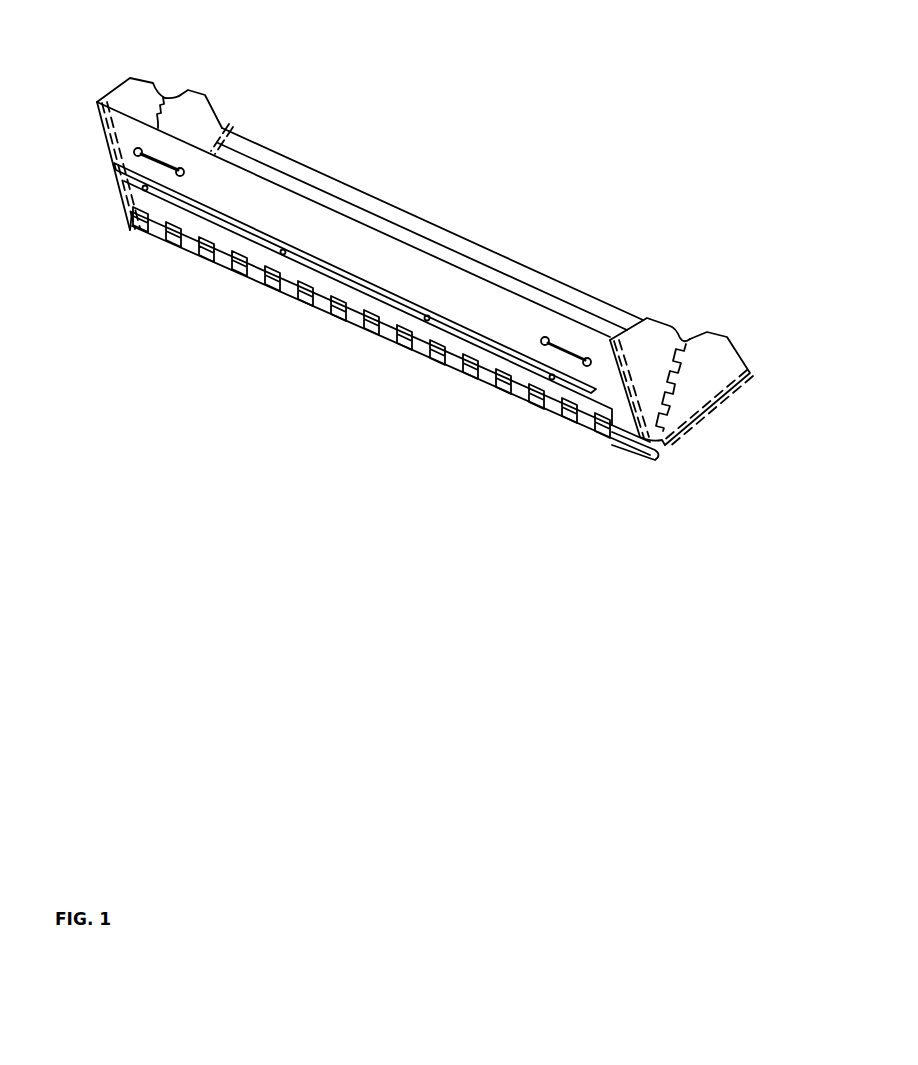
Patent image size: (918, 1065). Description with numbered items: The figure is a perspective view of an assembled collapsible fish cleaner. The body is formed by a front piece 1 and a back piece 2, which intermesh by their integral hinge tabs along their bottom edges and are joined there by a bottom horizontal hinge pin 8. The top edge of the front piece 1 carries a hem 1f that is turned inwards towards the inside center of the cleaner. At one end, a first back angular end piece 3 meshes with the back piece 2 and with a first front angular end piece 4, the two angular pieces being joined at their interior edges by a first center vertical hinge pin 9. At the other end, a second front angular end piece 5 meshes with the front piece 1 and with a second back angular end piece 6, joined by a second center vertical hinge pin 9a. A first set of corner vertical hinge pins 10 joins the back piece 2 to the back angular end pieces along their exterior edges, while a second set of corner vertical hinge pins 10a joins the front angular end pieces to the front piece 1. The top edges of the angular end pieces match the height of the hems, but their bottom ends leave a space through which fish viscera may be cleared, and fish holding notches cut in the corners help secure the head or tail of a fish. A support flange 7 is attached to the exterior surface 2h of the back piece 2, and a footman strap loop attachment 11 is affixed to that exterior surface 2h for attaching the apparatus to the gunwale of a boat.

The front piece 1 is at (343, 208).
The hem 1f is at (437, 237).
The back piece 2 is at (357, 302).
The exterior surface 2h is at (513, 377).
The first back angular end piece 3 is at (650, 357).
The first front angular end piece 4 is at (710, 373).
The second front angular end piece 5 is at (130, 93).
The second back angular end piece 6 is at (197, 110).
The support flange 7 is at (180, 205).
The bottom horizontal hinge pin 8 is at (652, 458).
The first center vertical hinge pin 9 is at (166, 103).
The second center vertical hinge pin 9a is at (683, 340).
The first set of corner vertical hinge pins 10 is at (97, 101).
The second set of corner vertical hinge pins 10a is at (615, 340).
The footman strap loop attachment 11 is at (128, 160).